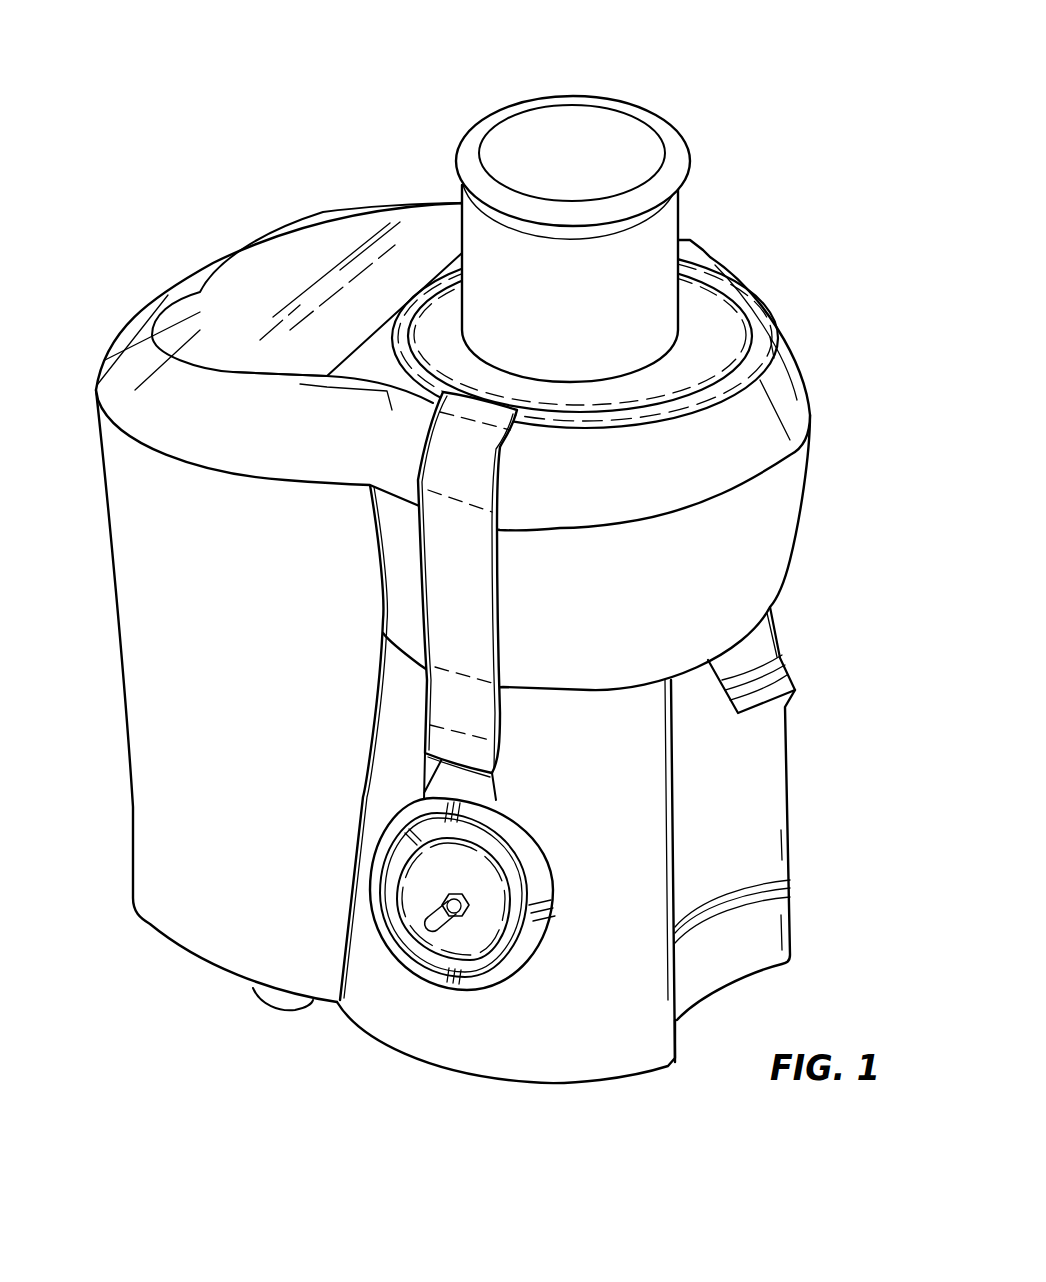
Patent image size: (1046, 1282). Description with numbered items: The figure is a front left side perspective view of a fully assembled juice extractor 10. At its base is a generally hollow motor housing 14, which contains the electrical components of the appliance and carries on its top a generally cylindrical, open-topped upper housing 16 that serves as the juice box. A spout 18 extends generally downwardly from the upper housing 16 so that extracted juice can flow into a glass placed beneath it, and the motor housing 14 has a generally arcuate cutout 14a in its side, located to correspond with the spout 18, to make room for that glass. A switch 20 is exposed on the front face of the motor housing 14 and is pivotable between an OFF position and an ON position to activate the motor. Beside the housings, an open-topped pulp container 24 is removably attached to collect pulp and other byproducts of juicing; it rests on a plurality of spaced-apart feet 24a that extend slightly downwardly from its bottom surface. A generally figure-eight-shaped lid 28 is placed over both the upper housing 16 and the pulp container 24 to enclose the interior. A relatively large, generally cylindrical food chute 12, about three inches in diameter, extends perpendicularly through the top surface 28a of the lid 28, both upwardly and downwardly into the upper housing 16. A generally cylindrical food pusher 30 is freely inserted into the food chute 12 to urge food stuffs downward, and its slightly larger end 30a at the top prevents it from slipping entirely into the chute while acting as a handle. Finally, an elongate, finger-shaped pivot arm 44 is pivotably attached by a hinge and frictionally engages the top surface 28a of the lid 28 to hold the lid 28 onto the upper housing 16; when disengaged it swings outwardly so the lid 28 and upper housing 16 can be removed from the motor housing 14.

The juice extractor 10 is at (465, 562).
The food chute 12 is at (663, 232).
The motor housing 14 is at (463, 1075).
The arcuate cutout 14a is at (760, 817).
The upper housing 16 is at (787, 530).
The spout 18 is at (778, 693).
The switch 20 is at (420, 923).
The pulp container 24 is at (130, 827).
The feet 24a is at (257, 993).
The lid 28 is at (273, 257).
The top surface 28a is at (710, 315).
The food pusher 30 is at (520, 130).
The larger end 30a is at (625, 147).
The pivot arm 44 is at (435, 550).